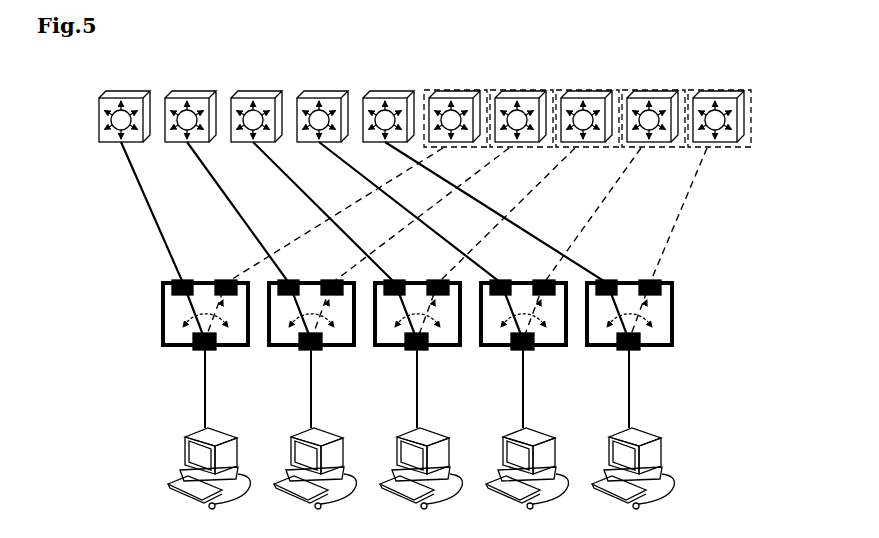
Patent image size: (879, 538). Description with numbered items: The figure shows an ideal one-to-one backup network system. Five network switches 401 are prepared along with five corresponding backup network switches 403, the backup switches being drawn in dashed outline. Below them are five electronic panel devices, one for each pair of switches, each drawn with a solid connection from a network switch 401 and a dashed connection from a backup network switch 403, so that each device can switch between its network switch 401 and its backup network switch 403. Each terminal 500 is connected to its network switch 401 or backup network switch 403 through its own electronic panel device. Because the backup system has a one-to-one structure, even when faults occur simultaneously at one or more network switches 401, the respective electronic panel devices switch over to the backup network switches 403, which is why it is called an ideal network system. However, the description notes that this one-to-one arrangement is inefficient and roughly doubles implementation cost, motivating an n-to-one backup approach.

The network switch 401 is at (98, 120).
The backup network switch 403 is at (750, 118).
The terminal 500 is at (185, 450).